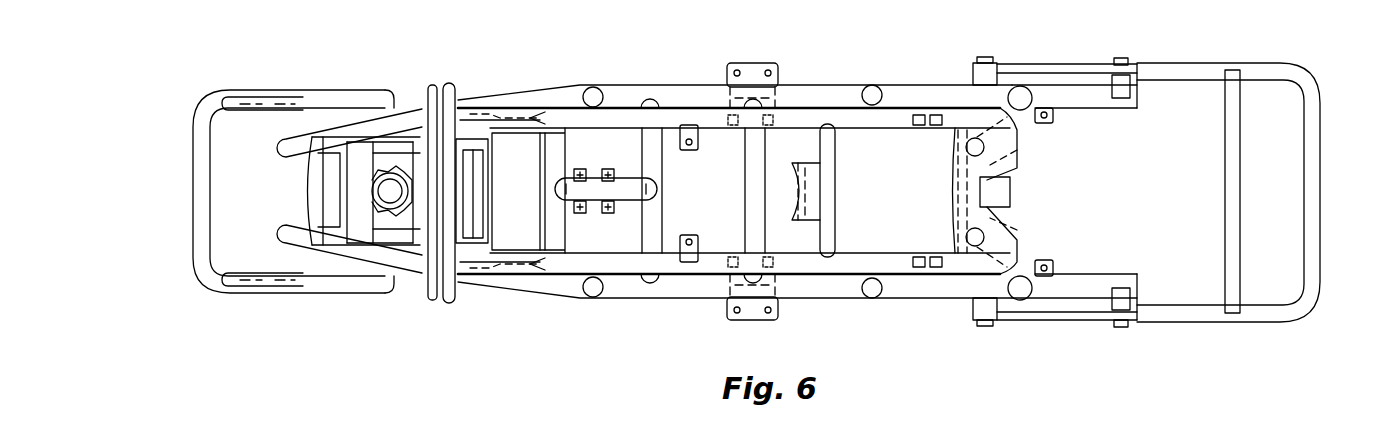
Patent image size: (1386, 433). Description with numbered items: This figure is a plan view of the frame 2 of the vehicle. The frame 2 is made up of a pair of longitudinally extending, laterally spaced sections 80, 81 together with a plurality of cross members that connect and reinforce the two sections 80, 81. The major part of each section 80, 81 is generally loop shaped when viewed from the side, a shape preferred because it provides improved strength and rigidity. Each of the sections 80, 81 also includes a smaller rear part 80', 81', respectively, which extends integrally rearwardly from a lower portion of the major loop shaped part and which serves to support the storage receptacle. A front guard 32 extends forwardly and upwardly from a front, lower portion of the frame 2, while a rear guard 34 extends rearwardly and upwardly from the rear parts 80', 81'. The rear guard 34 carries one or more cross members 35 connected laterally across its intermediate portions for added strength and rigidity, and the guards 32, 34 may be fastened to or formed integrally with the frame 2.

The frame 2 is at (562, 320).
The front guard 32 is at (187, 190).
The rear guard 34 is at (1190, 63).
The cross member 35 is at (1243, 185).
The section 80 is at (583, 236).
The rear part 80' is at (1021, 193).
The section 81 is at (735, 163).
The rear part 81' is at (1069, 192).